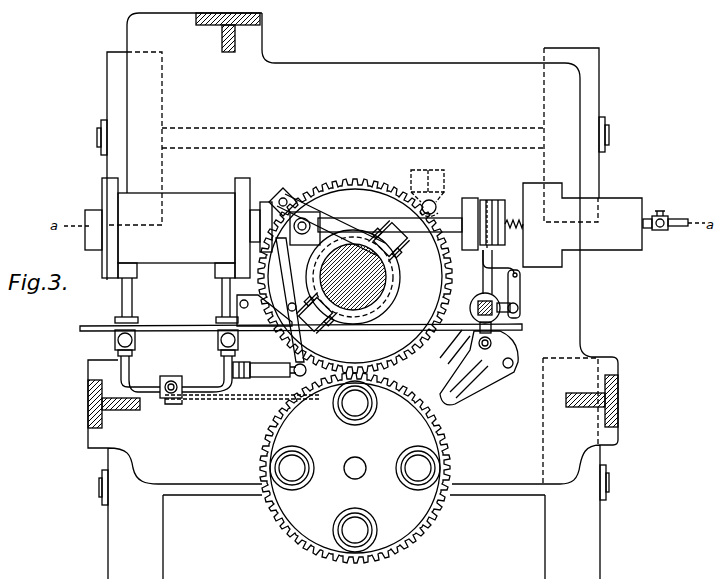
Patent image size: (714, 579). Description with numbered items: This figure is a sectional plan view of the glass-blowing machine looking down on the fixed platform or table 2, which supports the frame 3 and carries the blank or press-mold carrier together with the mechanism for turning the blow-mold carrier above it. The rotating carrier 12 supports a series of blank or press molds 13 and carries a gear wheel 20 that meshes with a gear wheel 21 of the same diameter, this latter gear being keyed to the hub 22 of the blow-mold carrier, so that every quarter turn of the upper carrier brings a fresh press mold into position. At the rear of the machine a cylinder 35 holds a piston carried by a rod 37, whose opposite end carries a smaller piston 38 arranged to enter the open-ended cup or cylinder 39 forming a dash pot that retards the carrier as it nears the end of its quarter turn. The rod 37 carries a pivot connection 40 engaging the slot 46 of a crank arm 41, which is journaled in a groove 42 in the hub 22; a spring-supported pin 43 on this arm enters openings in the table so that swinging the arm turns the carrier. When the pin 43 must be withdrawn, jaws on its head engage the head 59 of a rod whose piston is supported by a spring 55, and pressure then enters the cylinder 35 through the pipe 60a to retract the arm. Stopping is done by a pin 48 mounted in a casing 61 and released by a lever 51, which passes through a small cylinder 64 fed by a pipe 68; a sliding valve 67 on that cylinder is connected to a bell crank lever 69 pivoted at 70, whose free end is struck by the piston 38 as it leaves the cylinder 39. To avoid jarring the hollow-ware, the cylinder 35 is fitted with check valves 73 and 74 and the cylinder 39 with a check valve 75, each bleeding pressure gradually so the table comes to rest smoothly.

The fixed platform or table 2 is at (353, 296).
The frame 3 is at (353, 220).
The spring 55 is at (276, 25).
The cylinder 35 is at (172, 250).
The pin 43 is at (286, 195).
The slot 46 is at (322, 236).
The rod 37 is at (377, 219).
The gear wheel 21 is at (382, 363).
The hub 22 is at (395, 300).
The groove 42 is at (392, 281).
The pivot connection 40 is at (309, 221).
The crank arm 41 is at (269, 308).
The pipe 60a is at (241, 307).
The head 59 is at (438, 205).
The smaller piston 38 is at (492, 217).
The cup or cylinder 39 is at (582, 225).
The check valve 75 is at (665, 214).
The lever 51 is at (487, 285).
The pivot 70 is at (502, 263).
The bell crank lever 69 is at (515, 285).
The small cylinder 64 is at (481, 300).
The sliding valve 67 is at (505, 319).
The pin 48 is at (492, 344).
The casing 61 is at (479, 368).
The pipe 68 is at (455, 347).
The check valve 73 is at (301, 364).
The check valve 74 is at (242, 364).
The gear wheel 20 is at (440, 522).
The rotating carrier 12 is at (362, 456).
The blank or press molds 13 is at (355, 466).